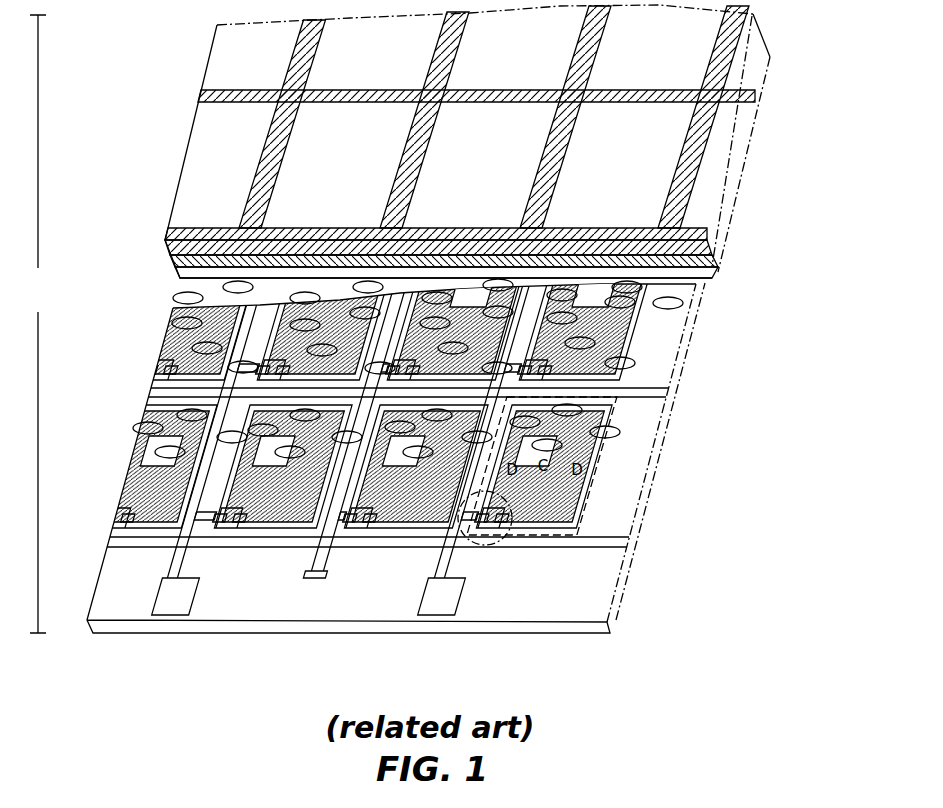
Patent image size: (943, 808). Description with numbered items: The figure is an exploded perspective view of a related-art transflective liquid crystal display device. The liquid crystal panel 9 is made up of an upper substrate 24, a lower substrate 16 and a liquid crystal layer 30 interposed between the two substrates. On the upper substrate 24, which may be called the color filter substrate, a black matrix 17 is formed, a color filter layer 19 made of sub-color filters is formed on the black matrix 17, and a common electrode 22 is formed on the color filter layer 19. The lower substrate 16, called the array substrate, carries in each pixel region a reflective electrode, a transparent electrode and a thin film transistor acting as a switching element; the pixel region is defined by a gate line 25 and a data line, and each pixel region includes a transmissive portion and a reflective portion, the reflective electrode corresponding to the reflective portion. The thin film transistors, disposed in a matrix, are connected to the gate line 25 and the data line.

The liquid crystal panel 9 is at (38, 324).
The lower substrate 16 is at (573, 628).
The black matrix 17 is at (752, 92).
The color filter layer 19 is at (670, 147).
The common electrode 22 is at (716, 270).
The upper substrate 24 is at (170, 240).
The gate line 25 is at (585, 541).
The liquid crystal layer 30 is at (640, 336).